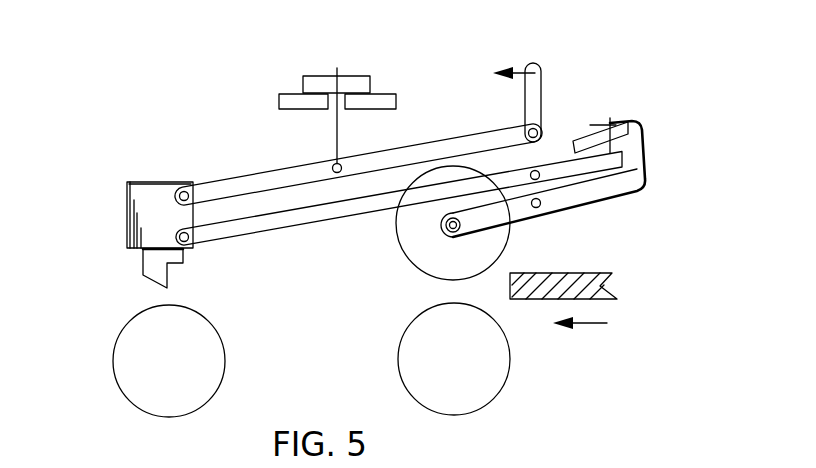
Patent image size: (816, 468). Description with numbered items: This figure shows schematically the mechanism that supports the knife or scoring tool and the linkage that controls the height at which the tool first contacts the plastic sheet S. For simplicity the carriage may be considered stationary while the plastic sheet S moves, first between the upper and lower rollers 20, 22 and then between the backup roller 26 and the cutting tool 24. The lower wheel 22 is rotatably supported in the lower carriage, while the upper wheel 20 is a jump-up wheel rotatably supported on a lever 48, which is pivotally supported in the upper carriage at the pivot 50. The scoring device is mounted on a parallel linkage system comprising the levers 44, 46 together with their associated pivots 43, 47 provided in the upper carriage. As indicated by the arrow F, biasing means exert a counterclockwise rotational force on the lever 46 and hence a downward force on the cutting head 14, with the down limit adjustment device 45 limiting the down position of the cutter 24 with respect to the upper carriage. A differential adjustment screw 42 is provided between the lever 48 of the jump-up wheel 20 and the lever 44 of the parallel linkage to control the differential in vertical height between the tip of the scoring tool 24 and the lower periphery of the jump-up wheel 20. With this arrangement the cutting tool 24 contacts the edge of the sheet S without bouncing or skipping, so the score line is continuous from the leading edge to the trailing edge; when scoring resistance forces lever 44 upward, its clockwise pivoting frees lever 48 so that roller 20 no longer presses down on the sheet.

The cutting head 14 is at (96, 164).
The jump-up wheel 20 is at (508, 231).
The lower wheel 22 is at (510, 365).
The cutting tool 24 is at (143, 268).
The backup roller 26 is at (225, 363).
The differential adjustment screw 42 is at (640, 92).
The pivot 43 is at (528, 128).
The lever 44 is at (300, 225).
The down limit adjustment device 45 is at (266, 73).
The lever 46 is at (247, 178).
The pivot 47 is at (538, 170).
The lever 48 is at (644, 182).
The pivot 50 is at (540, 205).
The biasing force arrow F is at (526, 72).
The plastic sheet S is at (613, 274).